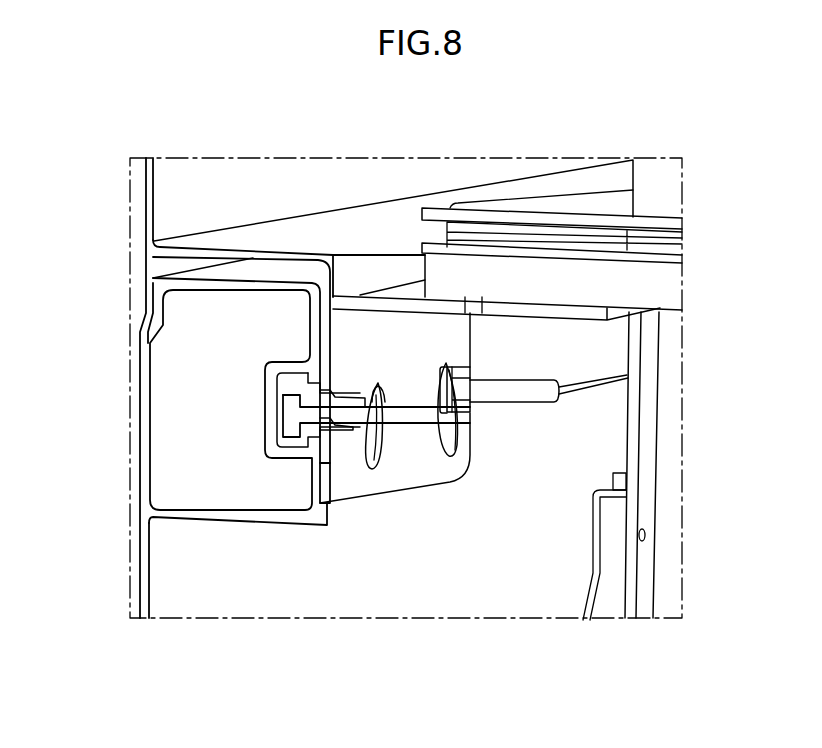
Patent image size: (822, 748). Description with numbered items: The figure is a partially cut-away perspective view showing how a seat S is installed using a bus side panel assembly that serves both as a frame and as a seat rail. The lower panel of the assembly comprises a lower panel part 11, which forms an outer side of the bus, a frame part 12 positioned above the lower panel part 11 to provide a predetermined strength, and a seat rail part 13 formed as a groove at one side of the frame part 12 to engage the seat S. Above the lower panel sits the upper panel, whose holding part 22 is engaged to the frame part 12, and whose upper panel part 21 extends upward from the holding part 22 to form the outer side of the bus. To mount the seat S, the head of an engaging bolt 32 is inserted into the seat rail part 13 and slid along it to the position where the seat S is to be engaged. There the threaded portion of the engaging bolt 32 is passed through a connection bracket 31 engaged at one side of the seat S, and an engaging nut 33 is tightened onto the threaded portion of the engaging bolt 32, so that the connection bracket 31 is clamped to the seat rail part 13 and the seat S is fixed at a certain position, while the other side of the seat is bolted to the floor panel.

The lower panel part 11 is at (240, 517).
The frame part 12 is at (140, 548).
The seat rail part 13 is at (280, 406).
The upper panel part 21 is at (150, 218).
The holding part 22 is at (153, 277).
The connection bracket 31 is at (425, 463).
The engaging bolt 32 is at (527, 390).
The engaging nut 33 is at (348, 435).
The seat S is at (592, 282).